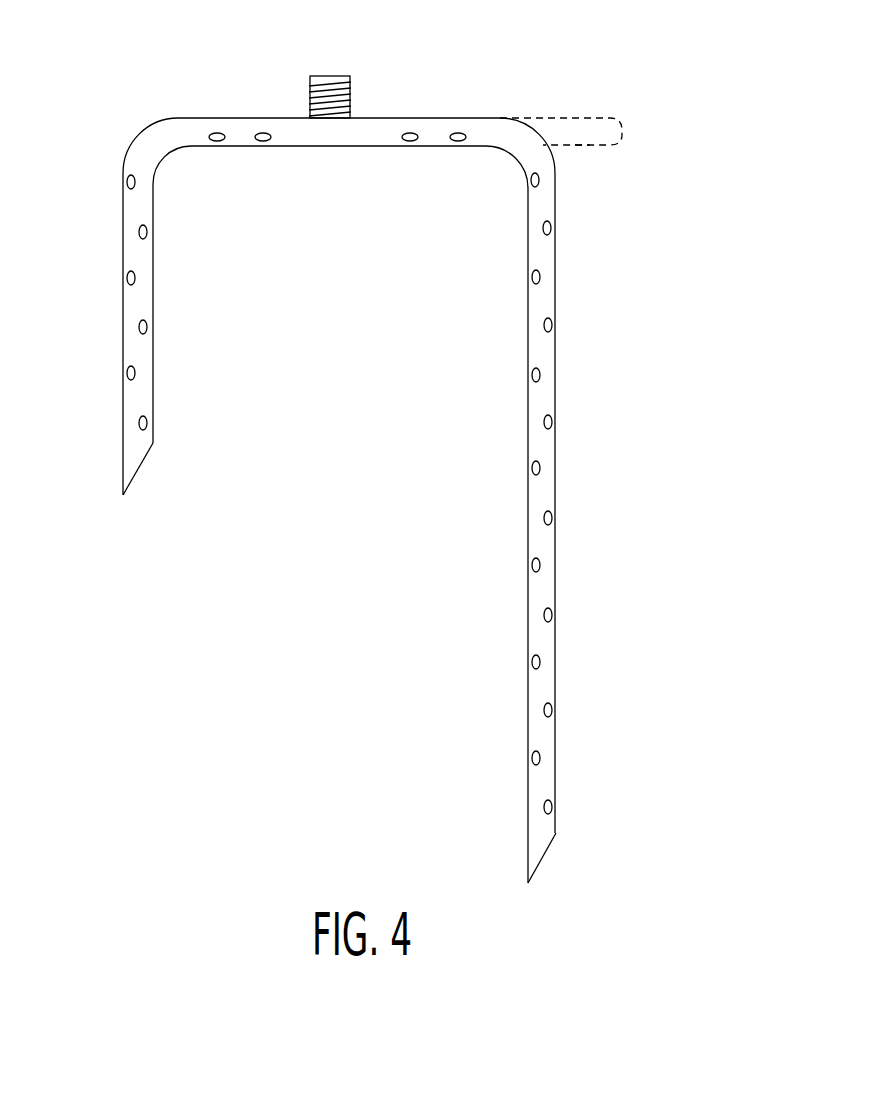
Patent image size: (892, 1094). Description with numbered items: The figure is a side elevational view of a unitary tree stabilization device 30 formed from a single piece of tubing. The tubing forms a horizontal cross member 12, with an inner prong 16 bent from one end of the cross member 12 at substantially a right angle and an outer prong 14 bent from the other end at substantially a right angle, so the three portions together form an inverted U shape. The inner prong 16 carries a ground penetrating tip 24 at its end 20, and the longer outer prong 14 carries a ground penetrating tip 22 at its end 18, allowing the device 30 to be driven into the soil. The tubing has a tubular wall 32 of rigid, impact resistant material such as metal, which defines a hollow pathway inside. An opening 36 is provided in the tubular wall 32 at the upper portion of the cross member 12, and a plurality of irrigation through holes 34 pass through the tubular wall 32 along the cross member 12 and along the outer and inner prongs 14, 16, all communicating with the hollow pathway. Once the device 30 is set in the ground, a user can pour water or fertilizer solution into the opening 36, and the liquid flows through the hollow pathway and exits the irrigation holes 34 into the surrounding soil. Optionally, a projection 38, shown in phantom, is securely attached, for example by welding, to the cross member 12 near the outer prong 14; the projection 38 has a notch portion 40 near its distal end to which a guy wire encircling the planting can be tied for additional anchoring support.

The cross member 12 is at (416, 113).
The outer prong 14 is at (556, 315).
The inner prong 16 is at (153, 262).
The end of outer prong 18 is at (549, 871).
The end of inner prong 20 is at (119, 510).
The ground penetrating tip 22 is at (552, 845).
The ground penetrating tip 24 is at (138, 468).
The tree stabilization device 30 is at (635, 74).
The tubular wall 32 is at (240, 140).
The irrigation through holes 34 is at (140, 326).
The opening 36 is at (331, 68).
The projection 38 is at (622, 131).
The notch portion 40 is at (585, 142).